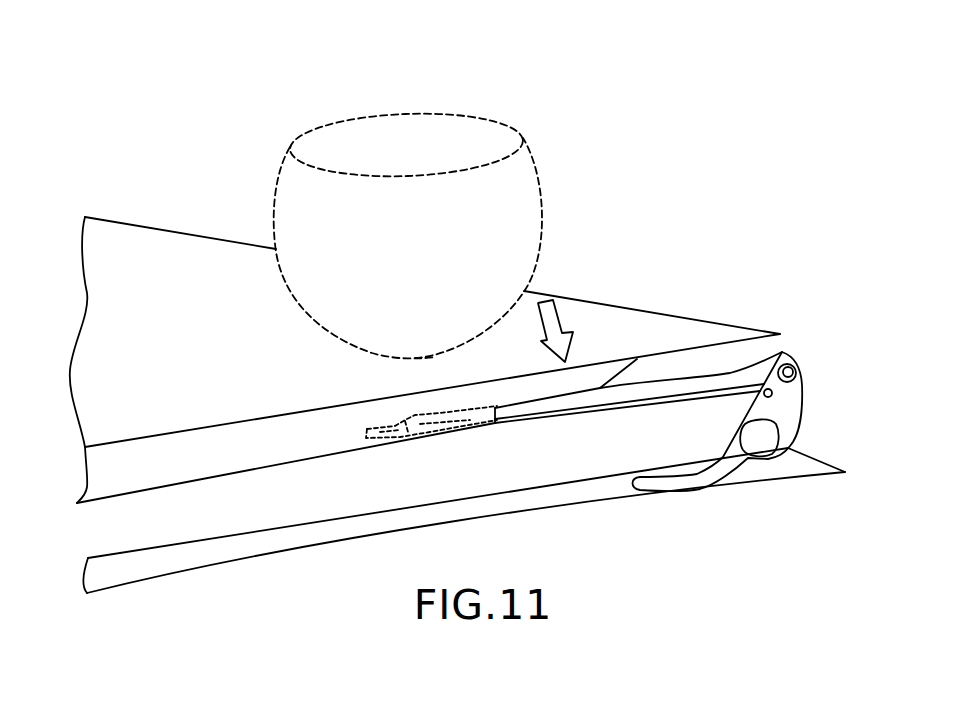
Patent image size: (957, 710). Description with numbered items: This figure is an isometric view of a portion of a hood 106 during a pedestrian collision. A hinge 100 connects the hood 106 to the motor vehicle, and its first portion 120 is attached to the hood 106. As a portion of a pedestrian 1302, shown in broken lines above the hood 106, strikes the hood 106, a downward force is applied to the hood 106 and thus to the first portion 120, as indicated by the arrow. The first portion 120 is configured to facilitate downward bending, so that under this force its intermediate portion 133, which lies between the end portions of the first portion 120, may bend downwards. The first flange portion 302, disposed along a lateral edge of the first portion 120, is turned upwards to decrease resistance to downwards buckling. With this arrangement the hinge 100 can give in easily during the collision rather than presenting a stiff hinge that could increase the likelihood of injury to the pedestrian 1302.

The hinge 100 is at (757, 489).
The hood 106 is at (647, 327).
The first portion 120 is at (653, 407).
The intermediate portion 133 is at (702, 411).
The first flange portion 302 is at (511, 427).
The pedestrian 1302 is at (503, 123).